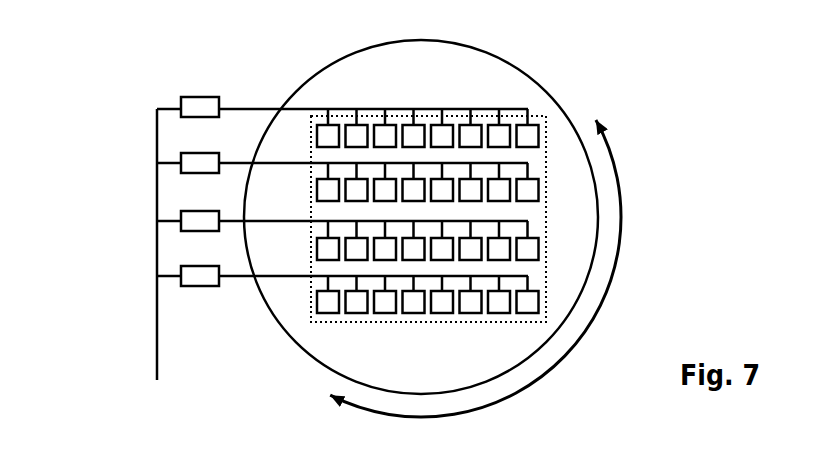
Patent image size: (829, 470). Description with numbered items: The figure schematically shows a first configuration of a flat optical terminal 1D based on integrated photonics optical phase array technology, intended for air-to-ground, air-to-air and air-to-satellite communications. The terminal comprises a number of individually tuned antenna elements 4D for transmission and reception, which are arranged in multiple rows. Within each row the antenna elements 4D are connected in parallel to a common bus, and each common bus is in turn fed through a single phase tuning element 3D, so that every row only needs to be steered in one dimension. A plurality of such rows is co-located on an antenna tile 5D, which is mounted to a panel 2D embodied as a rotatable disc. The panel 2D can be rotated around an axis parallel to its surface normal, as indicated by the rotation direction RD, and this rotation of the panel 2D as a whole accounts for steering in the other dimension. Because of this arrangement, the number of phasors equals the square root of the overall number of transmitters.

The flat optical terminal 1D is at (108, 47).
The panel 2D is at (518, 70).
The phase tuning element 3D is at (190, 117).
The antenna element 4D is at (317, 251).
The antenna tile 5D is at (319, 323).
The rotation direction RD is at (613, 162).